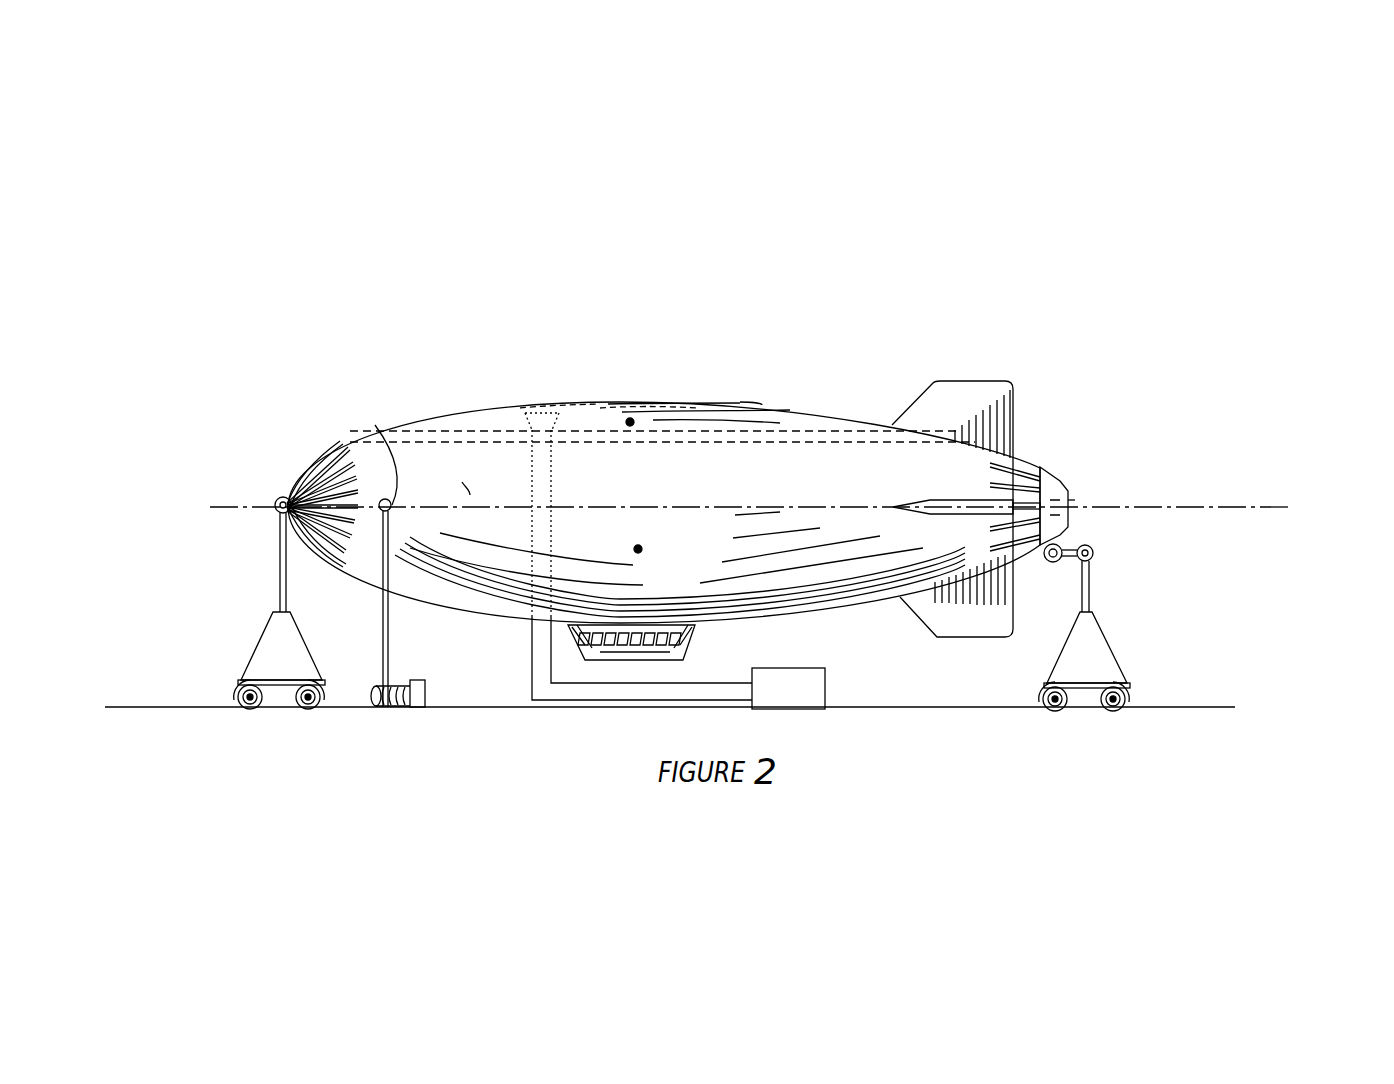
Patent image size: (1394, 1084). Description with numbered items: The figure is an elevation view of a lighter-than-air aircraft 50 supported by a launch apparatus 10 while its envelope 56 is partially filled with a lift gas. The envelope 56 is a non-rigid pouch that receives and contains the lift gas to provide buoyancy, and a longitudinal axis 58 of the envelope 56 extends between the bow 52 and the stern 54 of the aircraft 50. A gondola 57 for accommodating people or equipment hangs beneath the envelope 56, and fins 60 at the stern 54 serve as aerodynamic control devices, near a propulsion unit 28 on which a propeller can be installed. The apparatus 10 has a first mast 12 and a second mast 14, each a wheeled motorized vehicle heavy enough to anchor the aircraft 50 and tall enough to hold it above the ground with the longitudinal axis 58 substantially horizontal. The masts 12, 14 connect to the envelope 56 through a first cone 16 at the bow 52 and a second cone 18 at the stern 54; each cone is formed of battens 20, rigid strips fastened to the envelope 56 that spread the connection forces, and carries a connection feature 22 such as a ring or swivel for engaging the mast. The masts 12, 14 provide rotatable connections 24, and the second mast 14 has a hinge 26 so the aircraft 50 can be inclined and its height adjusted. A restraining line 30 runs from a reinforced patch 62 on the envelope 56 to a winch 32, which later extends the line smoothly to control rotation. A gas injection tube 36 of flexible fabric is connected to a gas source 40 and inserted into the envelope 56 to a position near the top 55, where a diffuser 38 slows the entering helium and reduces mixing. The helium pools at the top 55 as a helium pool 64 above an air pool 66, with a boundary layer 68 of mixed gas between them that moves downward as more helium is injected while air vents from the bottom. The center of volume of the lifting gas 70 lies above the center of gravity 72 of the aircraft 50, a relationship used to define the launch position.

The launch apparatus 10 is at (1247, 571).
The first mast 12 is at (258, 642).
The second mast 14 is at (1112, 645).
The first cone 16 is at (285, 497).
The second cone 18 is at (1030, 464).
The battens 20 is at (1000, 528).
The connection feature 22 is at (276, 503).
The rotatable connection 24 is at (281, 500).
The hinge 26 is at (1094, 551).
The propulsion unit 28 is at (1070, 493).
The restraining line 30 is at (390, 633).
The winch 32 is at (398, 708).
The gas injection tube 36 is at (620, 702).
The diffuser 38 is at (560, 427).
The gas source 40 is at (827, 685).
The lighter-than-air aircraft 50 is at (765, 257).
The bow 52 is at (322, 468).
The stern 54 is at (990, 462).
The top of the envelope 55 is at (762, 405).
The envelope 56 is at (820, 410).
The gondola 57 is at (685, 655).
The longitudinal axis 58 is at (225, 507).
The fins 60 is at (977, 382).
The reinforced patches 62 is at (378, 427).
The helium pool 64 is at (635, 394).
The air pool 66 is at (460, 472).
The boundary layer 68 is at (502, 431).
The center of volume of the lifting gas 70 is at (630, 422).
The center of gravity 72 is at (638, 549).